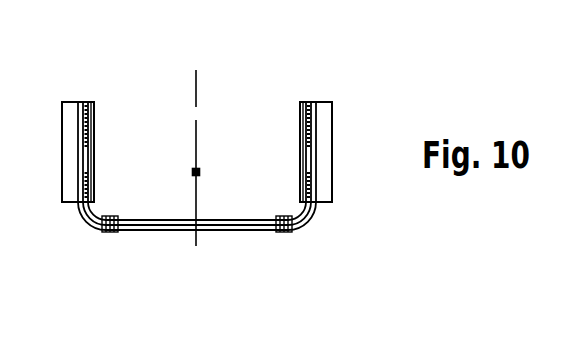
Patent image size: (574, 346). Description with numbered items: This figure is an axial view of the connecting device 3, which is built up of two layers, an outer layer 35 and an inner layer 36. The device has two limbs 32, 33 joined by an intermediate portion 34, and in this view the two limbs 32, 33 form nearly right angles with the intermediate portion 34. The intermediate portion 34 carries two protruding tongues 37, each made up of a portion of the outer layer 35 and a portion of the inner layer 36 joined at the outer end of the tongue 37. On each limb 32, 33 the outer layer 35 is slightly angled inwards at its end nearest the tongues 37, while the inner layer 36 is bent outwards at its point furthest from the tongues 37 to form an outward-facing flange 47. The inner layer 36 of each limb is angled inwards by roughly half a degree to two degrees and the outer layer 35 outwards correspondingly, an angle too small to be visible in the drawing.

The connecting device 3 is at (245, 78).
The limb 32 is at (94, 141).
The limb 33 is at (300, 150).
The intermediate portion 34 is at (231, 222).
The outer layer 35 is at (76, 101).
The inner layer 36 is at (90, 101).
The tongue 37 is at (116, 232).
The flange 47 is at (326, 108).